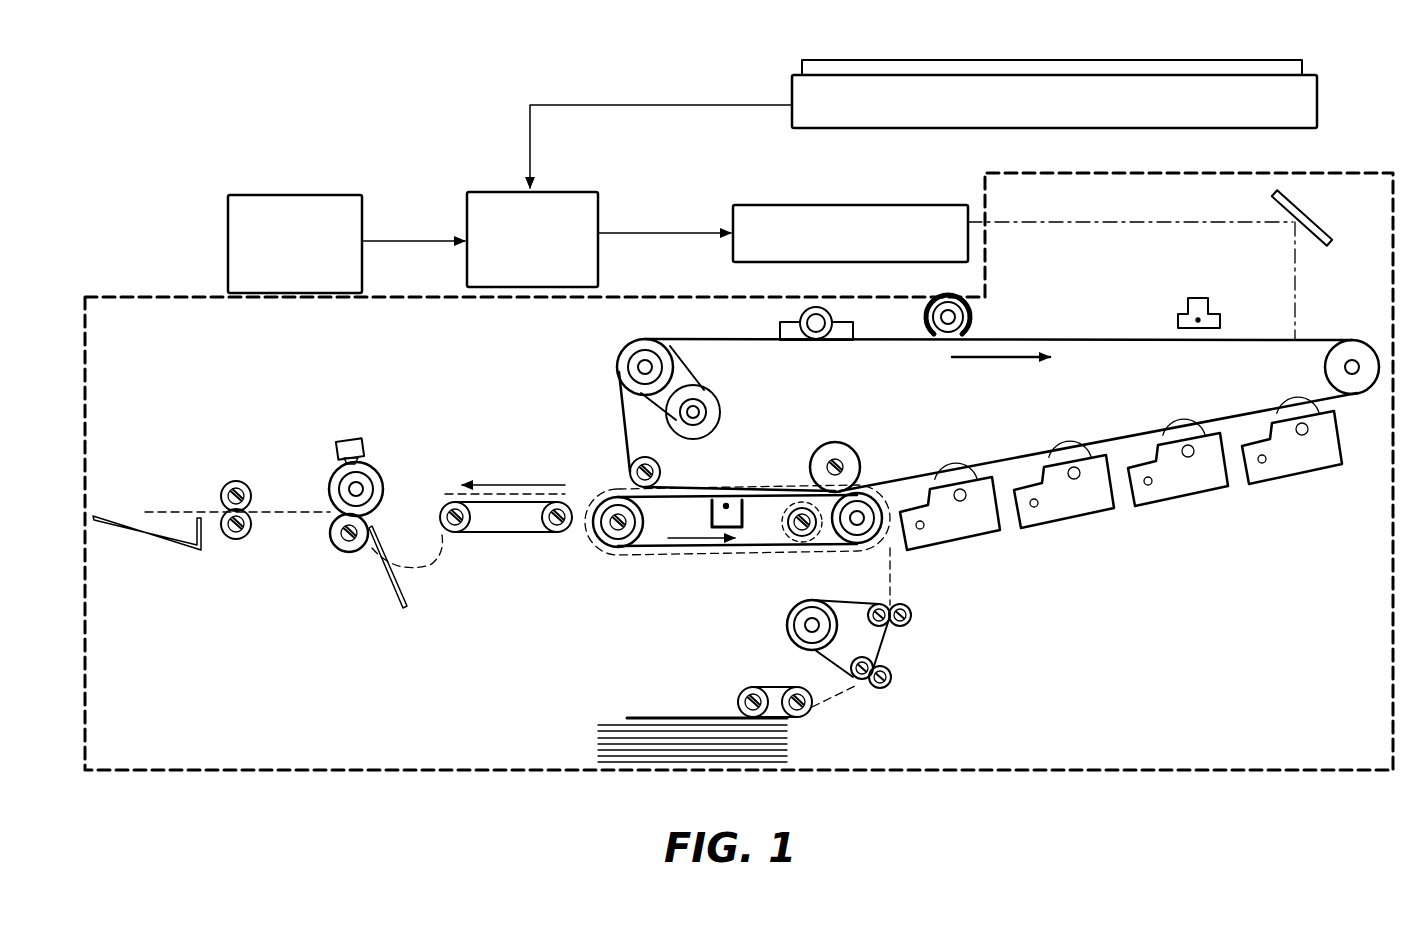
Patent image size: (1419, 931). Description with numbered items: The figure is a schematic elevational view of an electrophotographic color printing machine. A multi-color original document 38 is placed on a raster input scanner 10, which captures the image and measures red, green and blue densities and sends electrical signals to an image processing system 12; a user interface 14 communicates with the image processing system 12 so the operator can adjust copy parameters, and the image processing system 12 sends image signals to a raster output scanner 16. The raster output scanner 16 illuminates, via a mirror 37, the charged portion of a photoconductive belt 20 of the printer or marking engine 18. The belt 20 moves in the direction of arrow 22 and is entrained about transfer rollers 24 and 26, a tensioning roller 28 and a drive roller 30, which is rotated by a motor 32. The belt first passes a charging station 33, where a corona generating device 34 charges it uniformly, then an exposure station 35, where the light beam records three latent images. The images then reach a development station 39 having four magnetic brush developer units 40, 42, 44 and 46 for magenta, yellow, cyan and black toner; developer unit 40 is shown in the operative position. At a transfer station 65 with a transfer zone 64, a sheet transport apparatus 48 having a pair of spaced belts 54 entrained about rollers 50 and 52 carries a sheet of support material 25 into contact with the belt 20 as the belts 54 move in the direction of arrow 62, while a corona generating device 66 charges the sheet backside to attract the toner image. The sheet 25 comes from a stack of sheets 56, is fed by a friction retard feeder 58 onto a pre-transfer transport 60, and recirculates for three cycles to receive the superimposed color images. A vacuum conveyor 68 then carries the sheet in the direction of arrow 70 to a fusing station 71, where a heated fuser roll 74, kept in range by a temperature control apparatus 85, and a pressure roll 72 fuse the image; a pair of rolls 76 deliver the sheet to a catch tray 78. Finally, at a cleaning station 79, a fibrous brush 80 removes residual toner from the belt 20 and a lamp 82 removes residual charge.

The raster input scanner 10 is at (767, 85).
The image processing system 12 is at (596, 181).
The user interface 14 is at (340, 180).
The raster output scanner 16 is at (882, 193).
The printer or marking engine 18 is at (1366, 165).
The photoconductive belt 20 is at (1092, 340).
The arrow 22 is at (998, 360).
The transfer roller 24 is at (630, 469).
The sheet of support material 25 is at (810, 706).
The transfer roller 26 is at (878, 456).
The tensioning roller 28 is at (1370, 332).
The drive roller 30 is at (624, 368).
The motor 32 is at (703, 402).
The charging station 33 is at (1162, 314).
The corona generating device 34 is at (1194, 300).
The exposure station 35 is at (1312, 318).
The mirror 37 is at (1310, 224).
The multi-color original document 38 is at (1296, 68).
The development station 39 is at (1222, 608).
The developer unit 40 is at (1287, 455).
The developer unit 42 is at (1195, 490).
The developer unit 44 is at (1055, 507).
The developer unit 46 is at (955, 530).
The sheet transport apparatus 48 is at (678, 568).
The roller 50 is at (612, 530).
The roller 52 is at (858, 520).
The belts 54 is at (750, 548).
The stack of sheets 56 is at (622, 718).
The friction retard feeder 58 is at (770, 688).
The pre-transfer transport 60 is at (880, 645).
The arrow 62 is at (710, 535).
The transfer zone 64 is at (735, 480).
The transfer station 65 is at (748, 503).
The corona generating device 66 is at (712, 500).
The vacuum conveyor 68 is at (495, 542).
The arrow 70 is at (506, 478).
The fusing station 71 is at (396, 405).
The pressure roll 72 is at (346, 548).
The heated fuser roll 74 is at (380, 470).
The pair of rolls 76 is at (224, 486).
The catch tray 78 is at (134, 540).
The cleaning station 79 is at (820, 357).
The fibrous brush 80 is at (830, 318).
The lamp 82 is at (978, 312).
The temperature control apparatus 85 is at (333, 434).